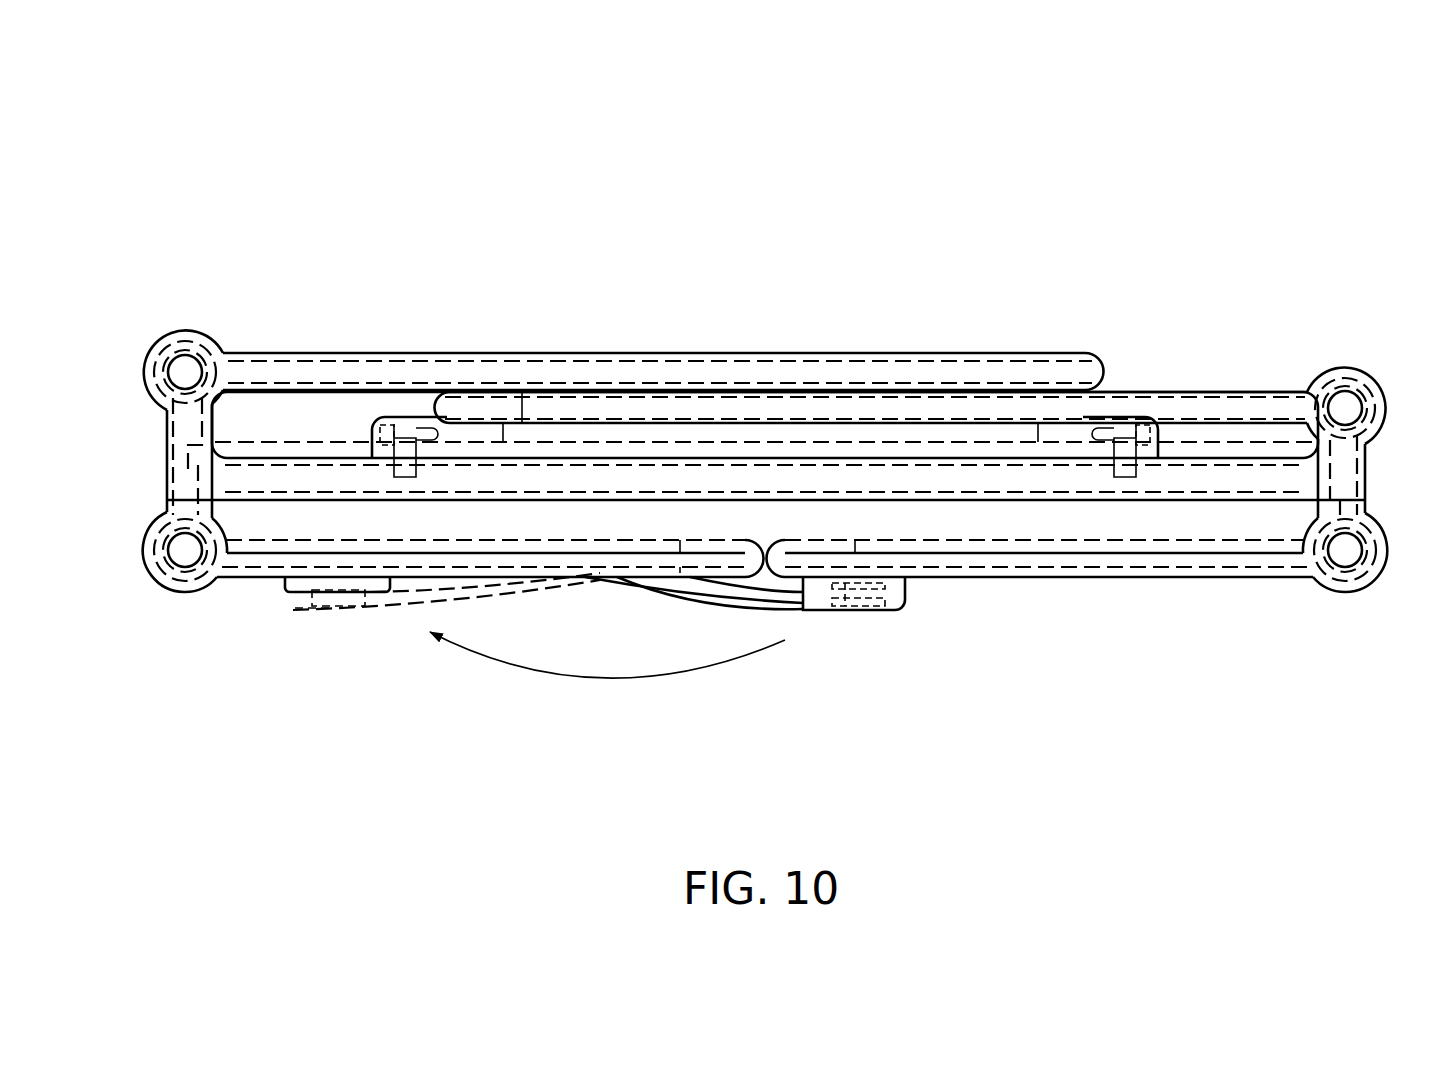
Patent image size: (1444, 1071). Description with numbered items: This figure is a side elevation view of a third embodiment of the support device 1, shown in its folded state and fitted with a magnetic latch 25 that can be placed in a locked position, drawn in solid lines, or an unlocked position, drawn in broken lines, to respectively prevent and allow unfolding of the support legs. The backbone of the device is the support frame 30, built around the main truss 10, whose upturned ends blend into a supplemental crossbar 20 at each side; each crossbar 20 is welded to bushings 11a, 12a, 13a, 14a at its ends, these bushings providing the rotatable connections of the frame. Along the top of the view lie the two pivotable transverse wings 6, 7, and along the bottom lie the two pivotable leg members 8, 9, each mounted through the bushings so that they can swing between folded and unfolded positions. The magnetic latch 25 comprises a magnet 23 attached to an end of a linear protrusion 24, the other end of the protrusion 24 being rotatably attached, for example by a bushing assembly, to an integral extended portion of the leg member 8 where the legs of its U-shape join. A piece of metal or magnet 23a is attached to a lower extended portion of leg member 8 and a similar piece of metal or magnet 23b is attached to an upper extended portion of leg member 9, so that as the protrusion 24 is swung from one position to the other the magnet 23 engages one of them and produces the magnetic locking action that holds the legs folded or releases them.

The support device 1 is at (968, 112).
The pivotable transverse wing 6 is at (862, 345).
The pivotable transverse wing 7 is at (1190, 380).
The pivotable leg member 8 is at (253, 600).
The pivotable leg member 9 is at (1192, 592).
The main truss 10 is at (1032, 480).
The bushing 11a is at (1352, 372).
The bushing 12a is at (190, 333).
The bushing 13a is at (1355, 597).
The bushing 14a is at (178, 597).
The supplemental crossbar 20 is at (183, 438).
The magnet 23 is at (336, 606).
The piece of metal or magnet 23a is at (350, 605).
The piece of metal or magnet 23b is at (905, 598).
The linear protrusion 24 is at (694, 598).
The magnetic latch 25 is at (868, 640).
The support frame 30 is at (296, 456).